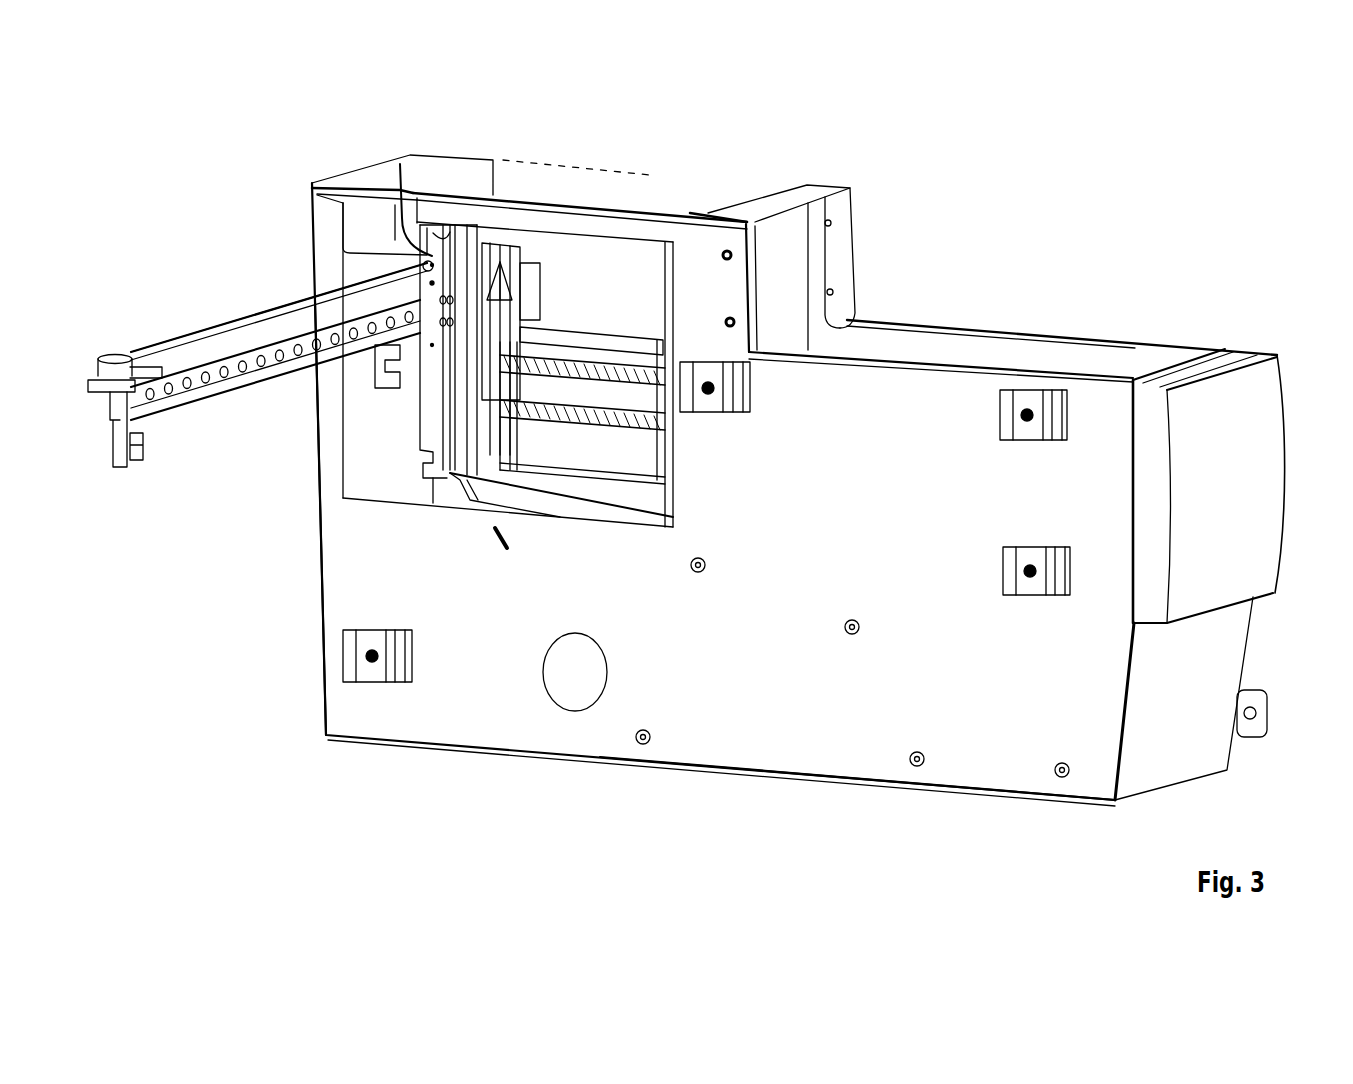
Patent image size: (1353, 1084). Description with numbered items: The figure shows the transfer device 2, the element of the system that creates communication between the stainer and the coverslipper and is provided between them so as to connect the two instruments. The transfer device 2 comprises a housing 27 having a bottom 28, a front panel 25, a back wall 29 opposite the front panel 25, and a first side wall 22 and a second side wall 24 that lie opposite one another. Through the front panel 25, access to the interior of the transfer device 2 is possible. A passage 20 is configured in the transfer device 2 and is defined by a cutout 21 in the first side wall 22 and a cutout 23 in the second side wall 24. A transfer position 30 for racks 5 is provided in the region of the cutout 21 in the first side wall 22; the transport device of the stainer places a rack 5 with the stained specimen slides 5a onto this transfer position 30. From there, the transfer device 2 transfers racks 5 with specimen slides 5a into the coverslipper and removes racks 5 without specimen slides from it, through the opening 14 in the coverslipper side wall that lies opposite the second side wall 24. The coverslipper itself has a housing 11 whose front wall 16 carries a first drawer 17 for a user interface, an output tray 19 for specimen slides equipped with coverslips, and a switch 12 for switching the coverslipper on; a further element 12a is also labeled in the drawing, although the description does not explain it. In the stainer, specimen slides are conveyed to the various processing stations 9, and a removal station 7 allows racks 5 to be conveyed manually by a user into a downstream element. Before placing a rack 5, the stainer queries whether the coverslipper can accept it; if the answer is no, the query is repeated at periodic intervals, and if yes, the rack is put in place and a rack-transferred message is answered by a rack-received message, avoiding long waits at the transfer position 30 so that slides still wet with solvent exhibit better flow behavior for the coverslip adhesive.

The transfer device 2 is at (897, 294).
The rack 5 is at (670, 432).
The specimen slides 5a is at (583, 343).
The removal station 7 is at (503, 257).
The processing stations 9 is at (278, 288).
The housing 11 is at (102, 400).
The switch 12 is at (450, 393).
The slide bracket 12a is at (487, 473).
The opening 14 is at (380, 215).
The front wall 16 is at (400, 164).
The first drawer 17 is at (137, 460).
The output tray 19 is at (177, 343).
The passage 20 is at (600, 247).
The cutout 21 is at (813, 260).
The first side wall 22 is at (1128, 357).
The cutout 23 is at (350, 503).
The second side wall 24 is at (455, 730).
The front panel 25 is at (1247, 517).
The housing 27 is at (1060, 333).
The bottom 28 is at (750, 770).
The back wall 29 is at (322, 660).
The transfer position 30 is at (542, 297).